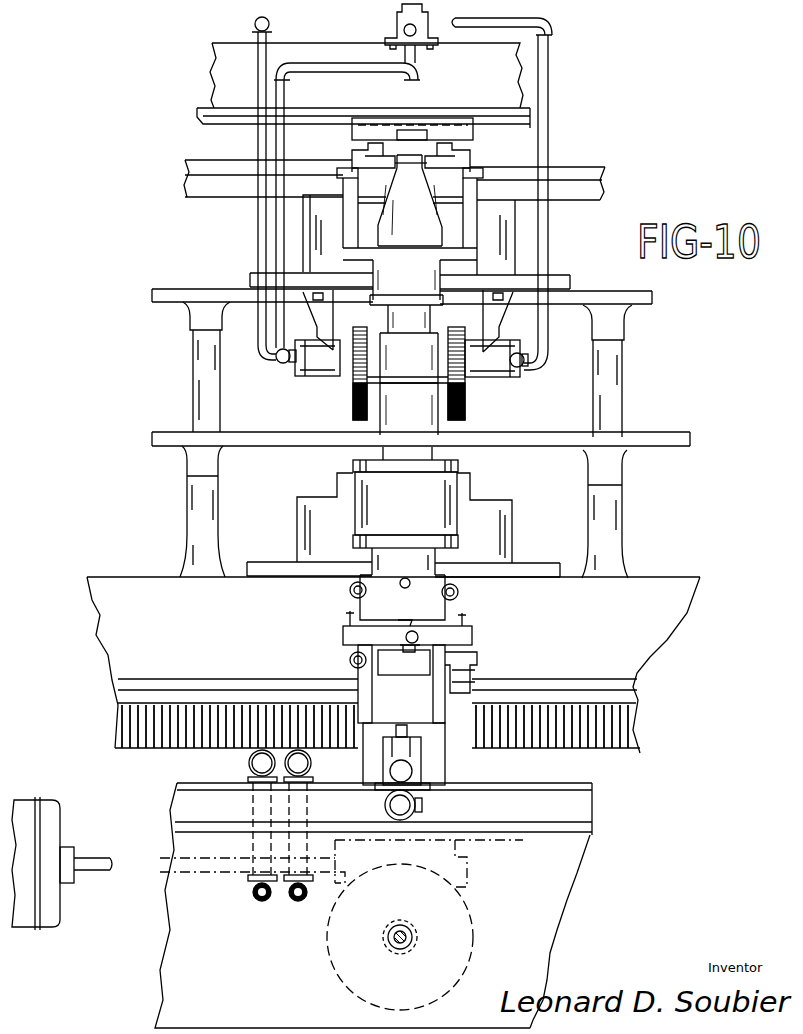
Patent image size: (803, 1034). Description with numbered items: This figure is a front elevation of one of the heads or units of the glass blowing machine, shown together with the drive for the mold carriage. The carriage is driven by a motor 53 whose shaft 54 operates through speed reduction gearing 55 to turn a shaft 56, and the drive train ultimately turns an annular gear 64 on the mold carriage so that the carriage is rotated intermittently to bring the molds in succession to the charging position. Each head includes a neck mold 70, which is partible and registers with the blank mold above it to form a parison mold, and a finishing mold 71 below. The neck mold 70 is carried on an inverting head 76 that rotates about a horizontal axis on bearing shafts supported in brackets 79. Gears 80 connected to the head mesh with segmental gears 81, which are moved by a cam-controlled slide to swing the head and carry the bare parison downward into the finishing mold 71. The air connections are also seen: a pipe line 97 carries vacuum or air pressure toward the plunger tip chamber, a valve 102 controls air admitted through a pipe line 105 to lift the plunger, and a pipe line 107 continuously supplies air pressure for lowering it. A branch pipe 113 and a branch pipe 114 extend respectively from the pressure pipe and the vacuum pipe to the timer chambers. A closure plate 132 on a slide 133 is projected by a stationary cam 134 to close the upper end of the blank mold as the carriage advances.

The motor 53 is at (52, 823).
The shaft 54 is at (97, 870).
The speed reduction gearing 55 is at (466, 905).
The shaft 56 is at (412, 938).
The annular gear 64 is at (632, 737).
The neck mold 70 is at (386, 222).
The finishing mold 71 is at (460, 469).
The inverting head 76 is at (425, 342).
The brackets 79 is at (322, 370).
The gears 80 is at (368, 313).
The segmental gears 81 is at (352, 405).
The pipe line 97 is at (548, 128).
The valve 102 is at (397, 22).
The pipe line 105 is at (360, 75).
The pipe line 107 is at (262, 50).
The branch pipe 113 is at (308, 773).
The branch pipe 114 is at (248, 773).
The closure plate 132 is at (430, 164).
The slide 133 is at (387, 163).
The stationary cam 134 is at (463, 133).